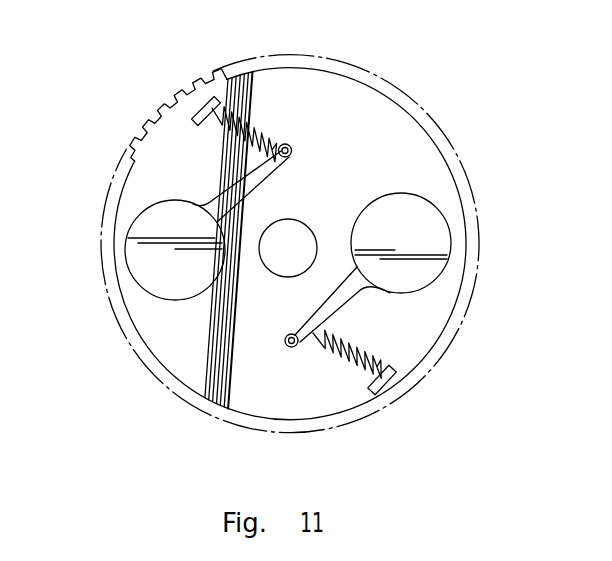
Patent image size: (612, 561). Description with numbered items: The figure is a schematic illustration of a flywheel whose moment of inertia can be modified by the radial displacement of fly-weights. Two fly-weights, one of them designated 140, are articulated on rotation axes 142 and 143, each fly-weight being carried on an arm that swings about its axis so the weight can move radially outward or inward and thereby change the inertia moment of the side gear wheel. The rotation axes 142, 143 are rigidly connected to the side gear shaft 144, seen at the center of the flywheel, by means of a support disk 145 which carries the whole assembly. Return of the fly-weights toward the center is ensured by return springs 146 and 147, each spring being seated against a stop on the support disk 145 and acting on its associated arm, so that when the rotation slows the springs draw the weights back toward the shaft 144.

The counterweight lobe 140 is at (133, 250).
The rotation axis 142 is at (290, 146).
The rotation axis 143 is at (293, 348).
The side gear shaft 144 is at (295, 238).
The support disk 145 is at (413, 162).
The return spring 146 is at (233, 97).
The return spring 147 is at (367, 377).